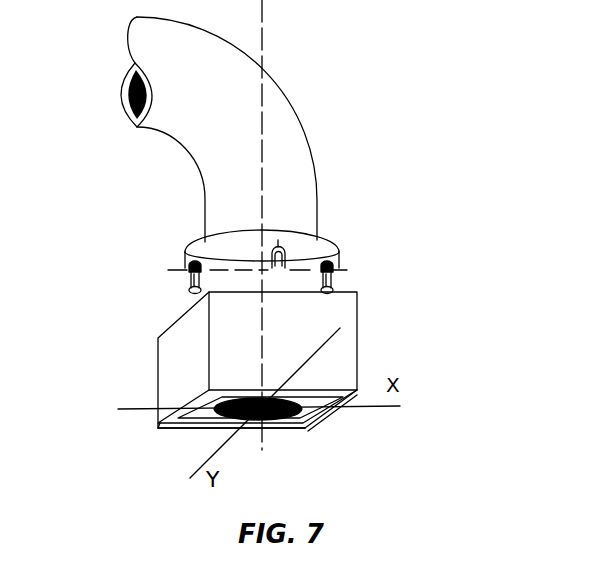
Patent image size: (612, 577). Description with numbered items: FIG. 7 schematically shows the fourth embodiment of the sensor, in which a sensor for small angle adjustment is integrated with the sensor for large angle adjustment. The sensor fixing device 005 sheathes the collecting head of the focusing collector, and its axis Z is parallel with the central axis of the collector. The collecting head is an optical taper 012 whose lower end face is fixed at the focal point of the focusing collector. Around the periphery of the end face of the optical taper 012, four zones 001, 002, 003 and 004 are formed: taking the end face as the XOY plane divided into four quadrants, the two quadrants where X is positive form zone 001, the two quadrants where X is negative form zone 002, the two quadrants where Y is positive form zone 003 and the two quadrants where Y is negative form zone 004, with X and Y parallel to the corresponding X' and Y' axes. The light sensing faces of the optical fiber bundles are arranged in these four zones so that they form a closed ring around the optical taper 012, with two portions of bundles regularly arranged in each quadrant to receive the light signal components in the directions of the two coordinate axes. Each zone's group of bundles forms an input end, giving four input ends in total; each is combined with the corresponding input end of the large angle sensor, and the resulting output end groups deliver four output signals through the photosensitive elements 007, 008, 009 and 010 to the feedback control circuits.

The zone 001 is at (305, 420).
The zone 002 is at (248, 424).
The zone 003 is at (225, 431).
The zone 004 is at (305, 390).
The fixing device 005 is at (230, 345).
The photosensitive element 007 is at (332, 278).
The photosensitive element 008 is at (190, 278).
The photosensitive element 009 is at (263, 292).
The photosensitive element 010 is at (263, 258).
The optical taper 012 is at (308, 425).